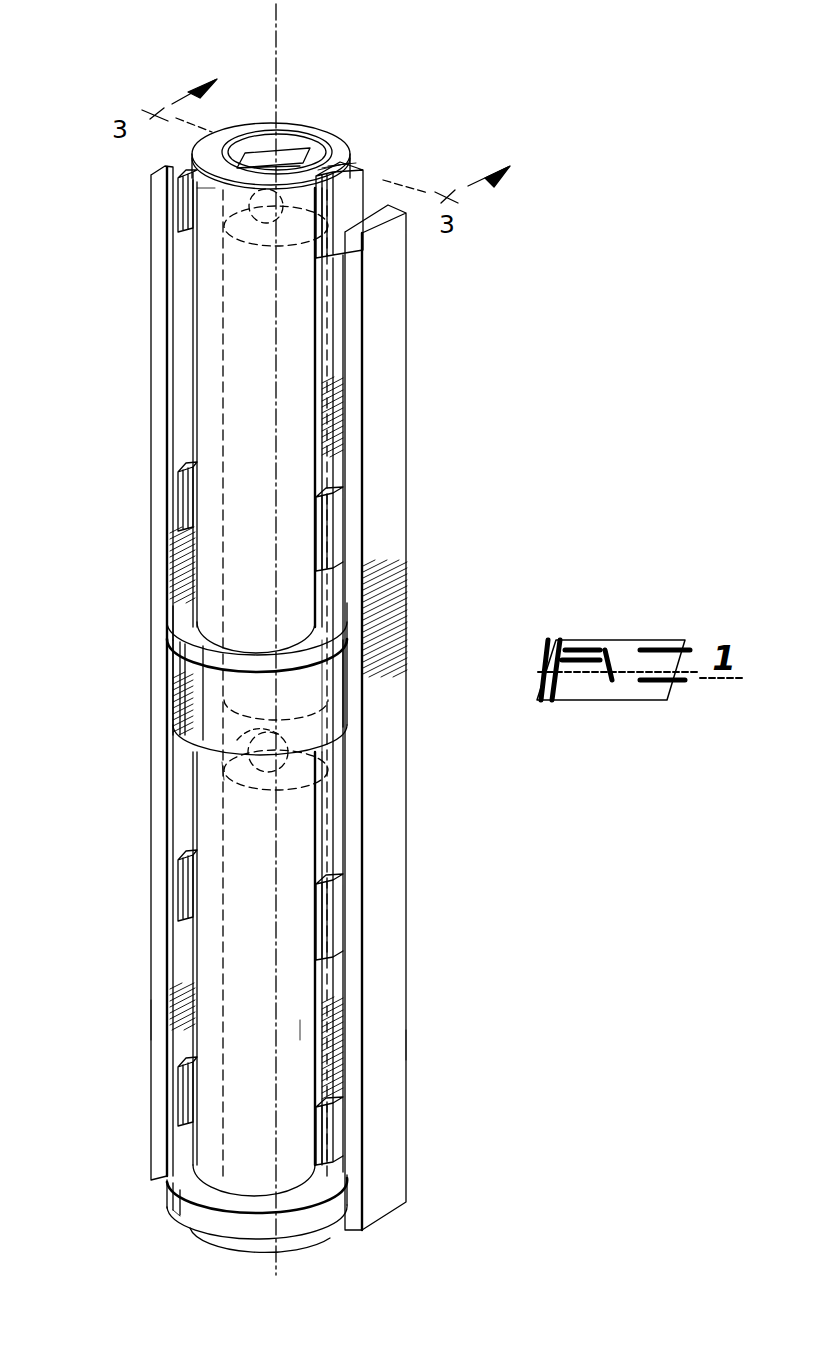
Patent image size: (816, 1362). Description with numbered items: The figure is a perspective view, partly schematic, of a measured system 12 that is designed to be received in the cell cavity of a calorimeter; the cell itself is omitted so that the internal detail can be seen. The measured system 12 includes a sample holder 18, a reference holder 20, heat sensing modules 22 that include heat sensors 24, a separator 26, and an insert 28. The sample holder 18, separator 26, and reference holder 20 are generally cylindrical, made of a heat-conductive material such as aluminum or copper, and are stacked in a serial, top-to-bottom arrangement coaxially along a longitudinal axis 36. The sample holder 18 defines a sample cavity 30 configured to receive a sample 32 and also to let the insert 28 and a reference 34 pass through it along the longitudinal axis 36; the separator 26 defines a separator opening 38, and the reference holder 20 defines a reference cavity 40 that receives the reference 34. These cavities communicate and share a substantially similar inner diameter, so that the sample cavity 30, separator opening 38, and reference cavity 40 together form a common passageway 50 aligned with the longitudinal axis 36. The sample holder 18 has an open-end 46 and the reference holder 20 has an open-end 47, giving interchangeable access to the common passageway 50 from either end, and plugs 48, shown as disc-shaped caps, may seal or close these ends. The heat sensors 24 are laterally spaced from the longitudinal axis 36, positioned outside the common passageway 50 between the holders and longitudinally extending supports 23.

The measured system 12 is at (450, 400).
The sample holder 18 is at (255, 125).
The reference holder 20 is at (312, 1205).
The heat sensing modules 22 is at (380, 328).
The longitudinally extending supports 23 is at (152, 1025).
The heat sensors 24 is at (362, 198).
The separator 26 is at (180, 705).
The insert 28 is at (318, 678).
The sample cavity 30 is at (213, 190).
The sample 32 is at (250, 367).
The reference 34 is at (300, 1028).
The longitudinal axis 36 is at (277, 40).
The separator opening 38 is at (225, 680).
The reference cavity 40 is at (222, 765).
The open-end 46 is at (300, 145).
The open-end 47 is at (228, 1230).
The plugs 48 is at (182, 1225).
The common passageway 50 is at (330, 780).